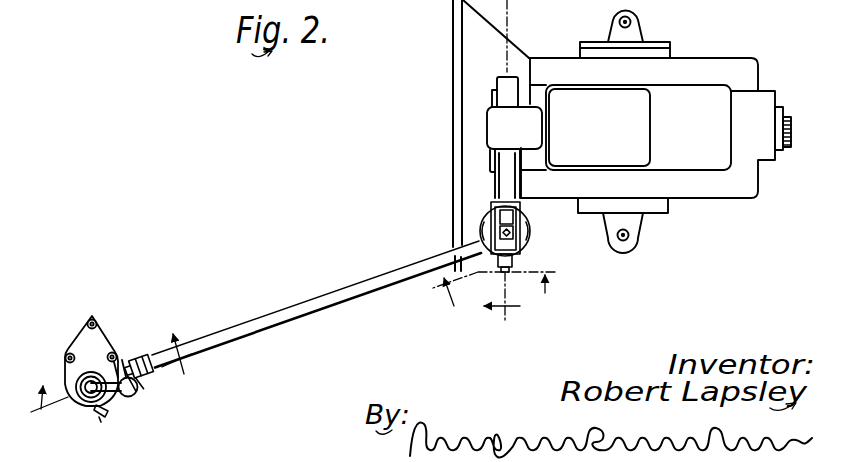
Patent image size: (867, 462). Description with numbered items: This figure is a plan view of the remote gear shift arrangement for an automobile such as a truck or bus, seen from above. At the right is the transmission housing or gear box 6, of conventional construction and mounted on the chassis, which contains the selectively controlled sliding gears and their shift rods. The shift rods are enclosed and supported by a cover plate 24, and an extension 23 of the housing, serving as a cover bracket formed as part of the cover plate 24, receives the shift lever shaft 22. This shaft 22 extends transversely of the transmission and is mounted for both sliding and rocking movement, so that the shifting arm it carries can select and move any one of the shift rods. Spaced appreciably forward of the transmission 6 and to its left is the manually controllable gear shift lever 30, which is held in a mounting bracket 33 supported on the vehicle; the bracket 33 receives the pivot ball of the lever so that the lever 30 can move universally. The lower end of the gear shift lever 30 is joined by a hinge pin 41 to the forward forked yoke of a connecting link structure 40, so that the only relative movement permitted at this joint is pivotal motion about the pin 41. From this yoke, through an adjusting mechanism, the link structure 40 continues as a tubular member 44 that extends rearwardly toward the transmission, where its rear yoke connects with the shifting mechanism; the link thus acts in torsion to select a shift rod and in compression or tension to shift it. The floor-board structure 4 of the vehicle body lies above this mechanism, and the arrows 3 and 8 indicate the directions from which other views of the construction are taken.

The section line 3 is at (510, 310).
The floor-board structure 4 is at (503, 299).
The transmission housing 6 is at (705, 55).
The section line 8 is at (112, 389).
The shift lever shaft 22 is at (507, 219).
The extension of the transmission housing 23 is at (492, 128).
The cover plate 24 is at (702, 165).
The gear shift lever 30 is at (116, 400).
The mounting bracket 33 is at (100, 342).
The connecting link structure 40 is at (299, 300).
The hinge pin 41 is at (102, 416).
The tubular member 44 is at (400, 268).